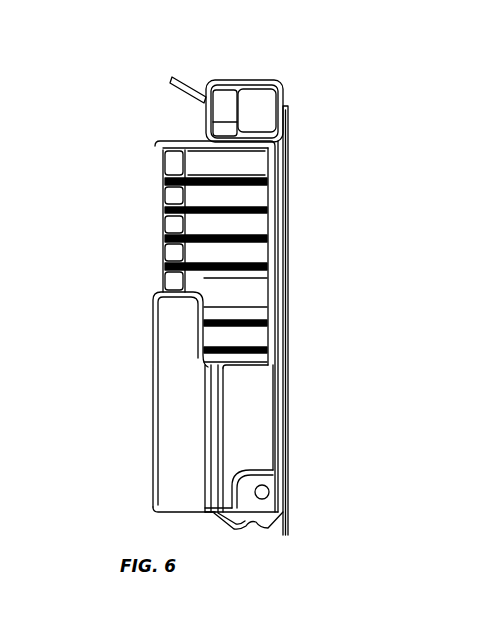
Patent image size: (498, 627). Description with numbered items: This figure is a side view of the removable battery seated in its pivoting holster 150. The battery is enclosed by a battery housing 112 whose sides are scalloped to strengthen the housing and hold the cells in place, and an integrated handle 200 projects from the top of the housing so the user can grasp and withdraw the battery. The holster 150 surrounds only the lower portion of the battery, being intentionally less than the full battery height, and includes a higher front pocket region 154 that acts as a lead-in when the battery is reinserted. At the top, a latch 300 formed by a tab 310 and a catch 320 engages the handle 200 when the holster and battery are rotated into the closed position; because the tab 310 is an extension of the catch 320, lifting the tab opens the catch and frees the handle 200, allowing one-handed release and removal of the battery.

The battery housing 112 is at (181, 231).
The holster 150 is at (182, 430).
The front pocket region 154 is at (137, 292).
The handle 200 is at (218, 106).
The latch 300 is at (285, 85).
The tab 310 is at (175, 80).
The catch 320 is at (283, 104).